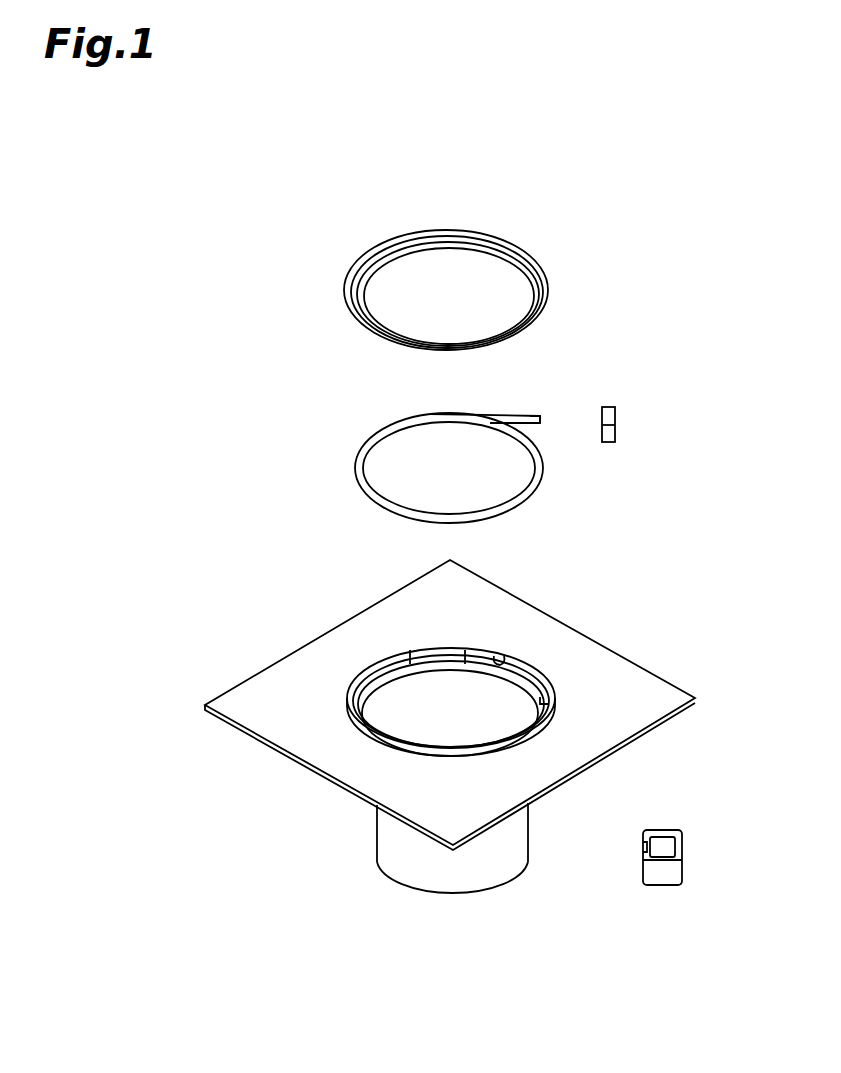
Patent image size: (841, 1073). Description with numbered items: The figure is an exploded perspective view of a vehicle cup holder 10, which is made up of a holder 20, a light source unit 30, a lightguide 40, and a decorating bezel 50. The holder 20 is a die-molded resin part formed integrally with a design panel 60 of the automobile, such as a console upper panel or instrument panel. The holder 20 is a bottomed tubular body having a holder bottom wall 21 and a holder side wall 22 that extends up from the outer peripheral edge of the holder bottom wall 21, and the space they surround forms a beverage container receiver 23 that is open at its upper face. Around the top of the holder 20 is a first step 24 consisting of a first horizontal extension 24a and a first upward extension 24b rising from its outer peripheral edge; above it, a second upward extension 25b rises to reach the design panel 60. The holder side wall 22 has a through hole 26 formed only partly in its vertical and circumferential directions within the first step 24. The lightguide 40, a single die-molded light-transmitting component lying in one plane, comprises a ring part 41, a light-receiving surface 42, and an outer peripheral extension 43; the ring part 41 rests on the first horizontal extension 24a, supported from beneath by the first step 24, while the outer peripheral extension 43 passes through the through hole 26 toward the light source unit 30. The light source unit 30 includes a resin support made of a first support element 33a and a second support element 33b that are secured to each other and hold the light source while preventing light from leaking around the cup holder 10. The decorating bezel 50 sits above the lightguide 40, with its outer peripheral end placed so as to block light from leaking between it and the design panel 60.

The vehicle cup holder 10 is at (237, 250).
The holder 20 is at (386, 754).
The holder bottom wall 21 is at (450, 898).
The holder side wall 22 is at (515, 852).
The beverage container receiver 23 is at (433, 742).
The first step 24 is at (365, 680).
The first horizontal extension 24a is at (350, 697).
The first upward extension 24b is at (380, 662).
The second upward extension 25b is at (410, 650).
The through hole 26 is at (498, 660).
The light source unit 30 is at (641, 446).
The first support element 33a is at (617, 415).
The second support element 33b is at (661, 842).
The lightguide 40 is at (446, 443).
The ring part 41 is at (405, 418).
The light-receiving surface 42 is at (541, 418).
The outer peripheral extension 43 is at (510, 416).
The decorating bezel 50 is at (531, 254).
The design panel 60 is at (591, 668).